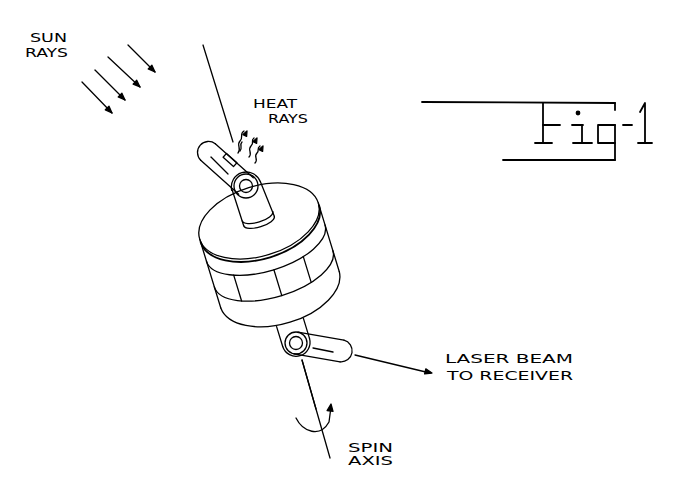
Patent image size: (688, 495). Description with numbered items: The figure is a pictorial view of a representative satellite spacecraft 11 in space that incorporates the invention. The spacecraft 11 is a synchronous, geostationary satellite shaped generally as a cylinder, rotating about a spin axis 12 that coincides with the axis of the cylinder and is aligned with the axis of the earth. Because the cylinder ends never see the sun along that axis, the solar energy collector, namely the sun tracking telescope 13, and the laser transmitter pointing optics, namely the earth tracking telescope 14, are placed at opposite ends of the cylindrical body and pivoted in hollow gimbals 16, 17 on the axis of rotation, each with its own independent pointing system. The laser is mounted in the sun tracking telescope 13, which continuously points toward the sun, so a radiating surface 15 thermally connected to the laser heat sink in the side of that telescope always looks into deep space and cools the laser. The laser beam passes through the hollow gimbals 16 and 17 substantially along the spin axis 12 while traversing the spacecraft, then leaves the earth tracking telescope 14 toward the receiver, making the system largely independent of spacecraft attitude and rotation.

The satellite spacecraft 11 is at (323, 209).
The spin axis 12 is at (307, 387).
The sun tracking telescope 13 is at (205, 171).
The earth tracking telescope 14 is at (327, 334).
The radiating surface 15 is at (252, 158).
The hollow gimbal 16 is at (243, 212).
The hollow gimbal 17 is at (276, 337).